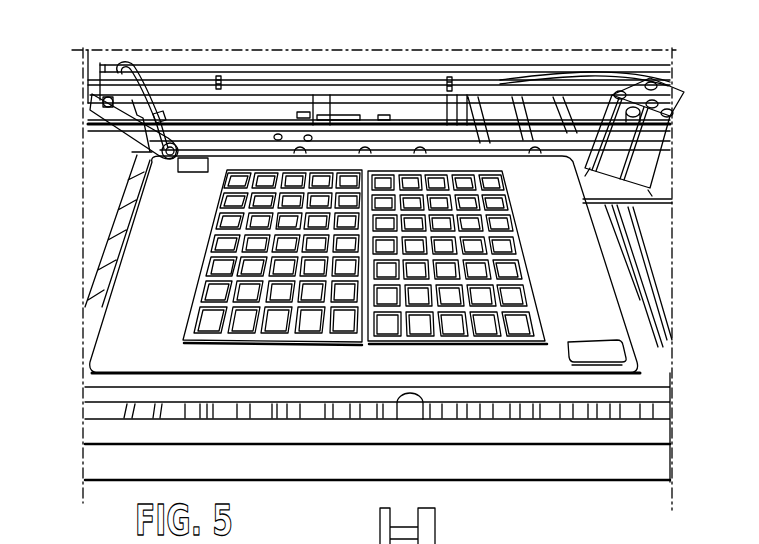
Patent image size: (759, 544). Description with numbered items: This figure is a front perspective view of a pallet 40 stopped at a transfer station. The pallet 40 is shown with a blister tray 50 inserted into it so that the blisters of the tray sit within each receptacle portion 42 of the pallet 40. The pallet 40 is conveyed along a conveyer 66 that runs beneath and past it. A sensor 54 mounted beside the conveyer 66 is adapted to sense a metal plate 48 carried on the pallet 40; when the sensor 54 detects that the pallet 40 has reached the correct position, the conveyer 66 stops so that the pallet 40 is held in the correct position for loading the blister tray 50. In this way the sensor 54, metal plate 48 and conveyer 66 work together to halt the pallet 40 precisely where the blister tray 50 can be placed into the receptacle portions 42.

The pallet 40 is at (597, 314).
The receptacle portion 42 is at (194, 287).
The metal plate 48 is at (216, 134).
The blister tray 50 is at (213, 230).
The sensor 54 is at (82, 152).
The conveyer 66 is at (658, 290).